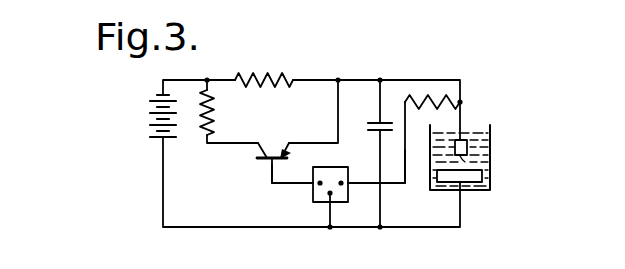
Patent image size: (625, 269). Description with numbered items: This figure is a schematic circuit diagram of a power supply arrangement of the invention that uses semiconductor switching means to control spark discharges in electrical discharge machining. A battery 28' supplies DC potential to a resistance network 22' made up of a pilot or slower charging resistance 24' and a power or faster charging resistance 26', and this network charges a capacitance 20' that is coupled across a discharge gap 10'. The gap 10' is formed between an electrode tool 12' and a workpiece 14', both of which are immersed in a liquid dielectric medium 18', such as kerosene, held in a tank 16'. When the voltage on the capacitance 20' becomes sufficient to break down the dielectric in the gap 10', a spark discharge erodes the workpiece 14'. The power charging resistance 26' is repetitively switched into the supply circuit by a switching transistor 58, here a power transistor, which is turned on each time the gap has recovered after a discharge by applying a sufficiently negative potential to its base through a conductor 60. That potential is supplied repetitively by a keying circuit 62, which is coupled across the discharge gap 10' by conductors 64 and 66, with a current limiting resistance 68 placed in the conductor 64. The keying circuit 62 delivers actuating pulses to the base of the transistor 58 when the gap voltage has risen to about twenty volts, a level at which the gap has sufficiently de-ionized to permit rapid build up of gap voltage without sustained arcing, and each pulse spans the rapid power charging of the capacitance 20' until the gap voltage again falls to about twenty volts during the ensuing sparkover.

The battery 28' is at (138, 116).
The power charging resistance 26' is at (194, 134).
The pilot charging resistance 24' is at (277, 66).
The resistance network 22' is at (317, 97).
The switching transistor 58 is at (283, 121).
The capacitance 20' is at (368, 113).
The current limiting resistance 68 is at (447, 99).
The conductor 60 is at (270, 182).
The keying circuit 62 is at (314, 191).
The conductor 64 is at (406, 170).
The conductor 66 is at (332, 212).
The tank 16' is at (473, 173).
The liquid dielectric medium 18' is at (479, 139).
The electrode tool 12' is at (497, 139).
The discharge gap 10' is at (500, 157).
The workpiece 14' is at (488, 181).